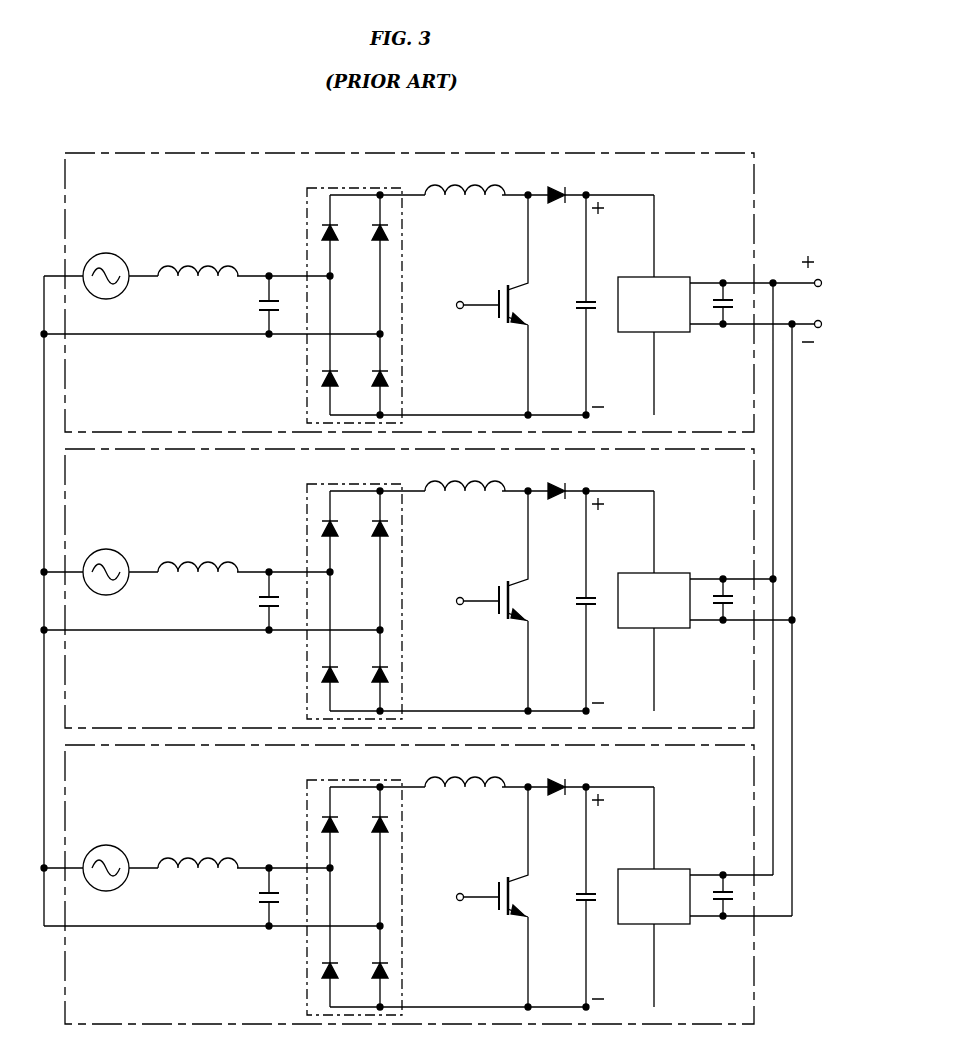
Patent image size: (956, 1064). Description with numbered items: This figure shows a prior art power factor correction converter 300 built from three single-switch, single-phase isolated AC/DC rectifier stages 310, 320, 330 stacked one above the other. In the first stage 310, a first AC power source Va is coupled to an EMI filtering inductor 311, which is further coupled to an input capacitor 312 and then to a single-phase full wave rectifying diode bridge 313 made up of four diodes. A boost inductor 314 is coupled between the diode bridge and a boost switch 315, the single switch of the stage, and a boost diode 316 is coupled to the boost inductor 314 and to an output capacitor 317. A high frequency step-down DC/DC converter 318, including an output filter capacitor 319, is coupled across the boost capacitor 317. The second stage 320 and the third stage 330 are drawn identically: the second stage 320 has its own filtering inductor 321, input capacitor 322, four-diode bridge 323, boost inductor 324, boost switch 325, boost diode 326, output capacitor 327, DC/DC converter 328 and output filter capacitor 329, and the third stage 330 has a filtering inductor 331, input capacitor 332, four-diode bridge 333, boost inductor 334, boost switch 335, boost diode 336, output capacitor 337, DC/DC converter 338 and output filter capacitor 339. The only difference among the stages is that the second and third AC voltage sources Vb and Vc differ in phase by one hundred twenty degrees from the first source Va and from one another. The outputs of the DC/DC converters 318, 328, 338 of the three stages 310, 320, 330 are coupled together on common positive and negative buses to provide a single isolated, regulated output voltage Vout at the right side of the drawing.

The PFC converter 300 is at (138, 118).
The first stage 310 is at (128, 409).
The EMI filtering inductor 311 is at (192, 265).
The input capacitor 312 is at (262, 300).
The diode bridge rectifier 313 is at (307, 232).
The boost inductor 314 is at (440, 186).
The boost switch 315 is at (480, 303).
The boost diode 316 is at (566, 188).
The output capacitor 317 is at (580, 300).
The high frequency step-down DC/DC converter 318 is at (672, 277).
The output filter capacitor 319 is at (706, 330).
The second stage 320 is at (128, 705).
The input filter inductor 321 is at (192, 561).
The input filter capacitor 322 is at (262, 596).
The diode bridge rectifier 323 is at (307, 528).
The boost inductor 324 is at (440, 482).
The boost switch (IGBT) 325 is at (480, 599).
The boost diode 326 is at (566, 484).
The DC bus capacitor 327 is at (580, 596).
The DC/DC converter 328 is at (672, 573).
The output capacitor 329 is at (706, 626).
The third stage 330 is at (128, 1001).
The input filter inductor 331 is at (192, 857).
The input filter capacitor 332 is at (262, 892).
The diode bridge rectifier 333 is at (307, 824).
The boost inductor 334 is at (440, 778).
The boost switch (IGBT) 335 is at (480, 895).
The boost diode 336 is at (566, 780).
The DC bus capacitor 337 is at (580, 892).
The DC/DC converter 338 is at (672, 869).
The output capacitor 339 is at (706, 922).